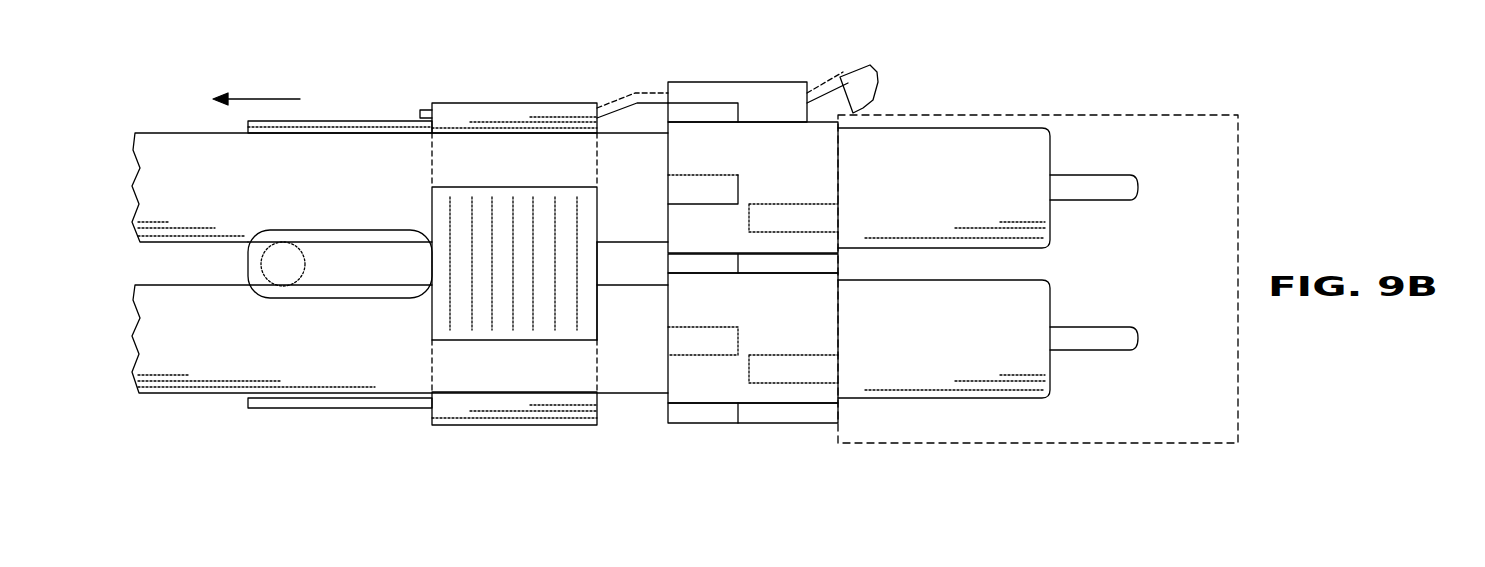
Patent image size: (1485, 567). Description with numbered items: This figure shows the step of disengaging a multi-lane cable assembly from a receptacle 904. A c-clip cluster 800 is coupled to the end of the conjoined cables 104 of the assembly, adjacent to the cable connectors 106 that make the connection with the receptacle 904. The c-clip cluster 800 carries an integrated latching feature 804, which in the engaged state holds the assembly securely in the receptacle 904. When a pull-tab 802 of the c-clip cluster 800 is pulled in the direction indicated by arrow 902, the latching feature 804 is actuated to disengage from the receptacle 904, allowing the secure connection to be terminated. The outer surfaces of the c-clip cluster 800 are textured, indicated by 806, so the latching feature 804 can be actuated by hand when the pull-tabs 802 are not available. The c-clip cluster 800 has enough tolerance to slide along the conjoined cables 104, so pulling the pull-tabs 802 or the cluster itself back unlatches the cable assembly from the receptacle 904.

The conjoined cables 104 is at (182, 132).
The cable connectors 106 is at (1088, 230).
The c-clip cluster 800 is at (508, 100).
The pull-tabs 802 is at (341, 120).
The latching feature 804 is at (853, 66).
The textured outer surfaces 806 is at (444, 215).
The arrow 902 is at (258, 98).
The receptacle 904 is at (1040, 113).